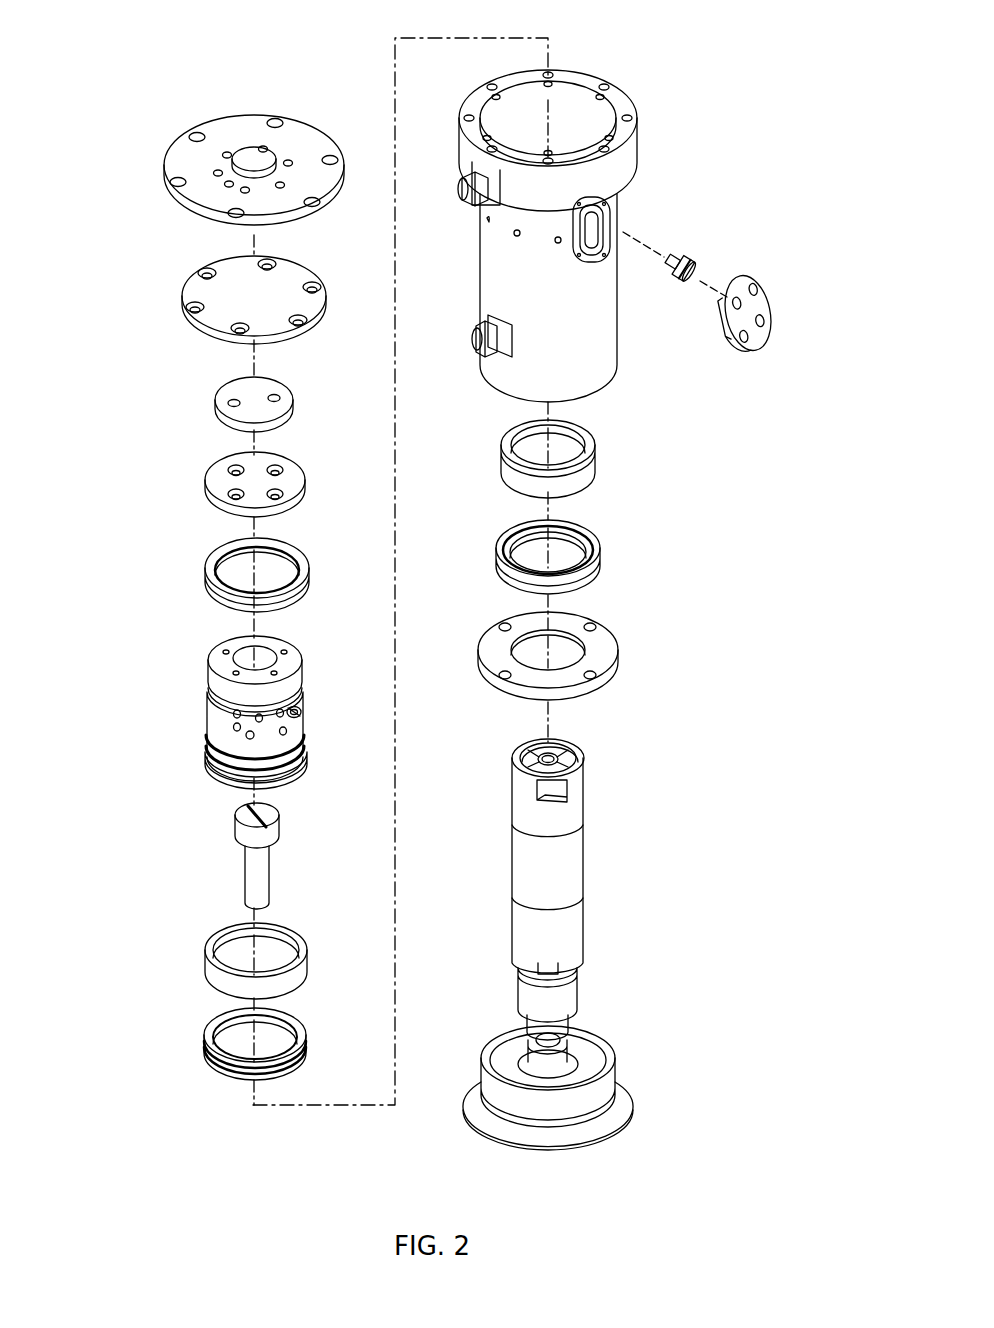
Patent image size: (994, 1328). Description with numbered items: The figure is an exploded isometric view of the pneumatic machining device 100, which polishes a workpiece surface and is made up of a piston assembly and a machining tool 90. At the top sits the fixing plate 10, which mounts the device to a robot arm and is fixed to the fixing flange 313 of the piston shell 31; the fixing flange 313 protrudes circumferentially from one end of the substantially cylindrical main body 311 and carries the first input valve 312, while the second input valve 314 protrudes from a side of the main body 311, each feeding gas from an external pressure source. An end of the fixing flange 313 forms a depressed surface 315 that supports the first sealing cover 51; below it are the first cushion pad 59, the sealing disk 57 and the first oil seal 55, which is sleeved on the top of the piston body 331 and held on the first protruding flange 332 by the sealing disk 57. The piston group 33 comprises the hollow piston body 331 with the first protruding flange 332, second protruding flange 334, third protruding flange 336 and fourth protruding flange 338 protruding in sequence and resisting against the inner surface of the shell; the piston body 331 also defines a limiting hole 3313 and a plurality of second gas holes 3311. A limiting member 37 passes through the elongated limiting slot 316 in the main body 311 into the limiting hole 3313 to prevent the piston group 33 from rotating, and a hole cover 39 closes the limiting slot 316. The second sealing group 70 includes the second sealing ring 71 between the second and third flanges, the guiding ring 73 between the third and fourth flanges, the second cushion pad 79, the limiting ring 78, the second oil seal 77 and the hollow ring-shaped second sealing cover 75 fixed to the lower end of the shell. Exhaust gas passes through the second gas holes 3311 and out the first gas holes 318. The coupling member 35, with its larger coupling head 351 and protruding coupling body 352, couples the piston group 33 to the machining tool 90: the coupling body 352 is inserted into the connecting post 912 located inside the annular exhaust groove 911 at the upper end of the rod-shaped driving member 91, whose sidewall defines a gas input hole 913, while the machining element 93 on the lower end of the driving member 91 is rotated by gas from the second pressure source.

The pneumatic machining device 100 is at (353, 29).
The fixing plate 10 is at (188, 165).
The first sealing cover 51 is at (197, 292).
The first cushion pad 59 is at (226, 402).
The sealing disk 57 is at (222, 480).
The first oil seal 55 is at (208, 570).
The piston group 33 is at (207, 715).
The first protruding flange 332 is at (213, 672).
The piston body 331 is at (218, 715).
The second protruding flange 334 is at (216, 737).
The third protruding flange 336 is at (216, 749).
The fourth protruding flange 338 is at (199, 777).
The limiting hole 3313 is at (305, 713).
The second gas holes 3311 is at (251, 738).
The second sealing ring 71 is at (243, 758).
The coupling member 35 is at (250, 856).
The coupling head 351 is at (281, 822).
The coupling body 352 is at (266, 878).
The guiding ring 73 is at (216, 976).
The second cushion pad 79 is at (216, 1040).
The second sealing group 70 is at (256, 1001).
The piston shell 31 is at (568, 234).
The fixing flange 313 is at (590, 137).
The depressed surface 315 is at (608, 115).
The main body 311 is at (604, 363).
The first input valve 312 is at (470, 200).
The second input valve 314 is at (481, 343).
The limiting slot 316 is at (606, 218).
The first gas holes 318 is at (560, 243).
The limiting member 37 is at (690, 262).
The hole cover 39 is at (762, 306).
The limiting ring 78 is at (586, 470).
The second oil seal 77 is at (590, 540).
The second sealing cover 75 is at (603, 650).
The machining tool 90 is at (589, 934).
The driving member 91 is at (558, 890).
The exhaust groove 911 is at (576, 755).
The connecting post 912 is at (536, 752).
The gas input hole 913 is at (512, 815).
The machining element 93 is at (576, 1076).